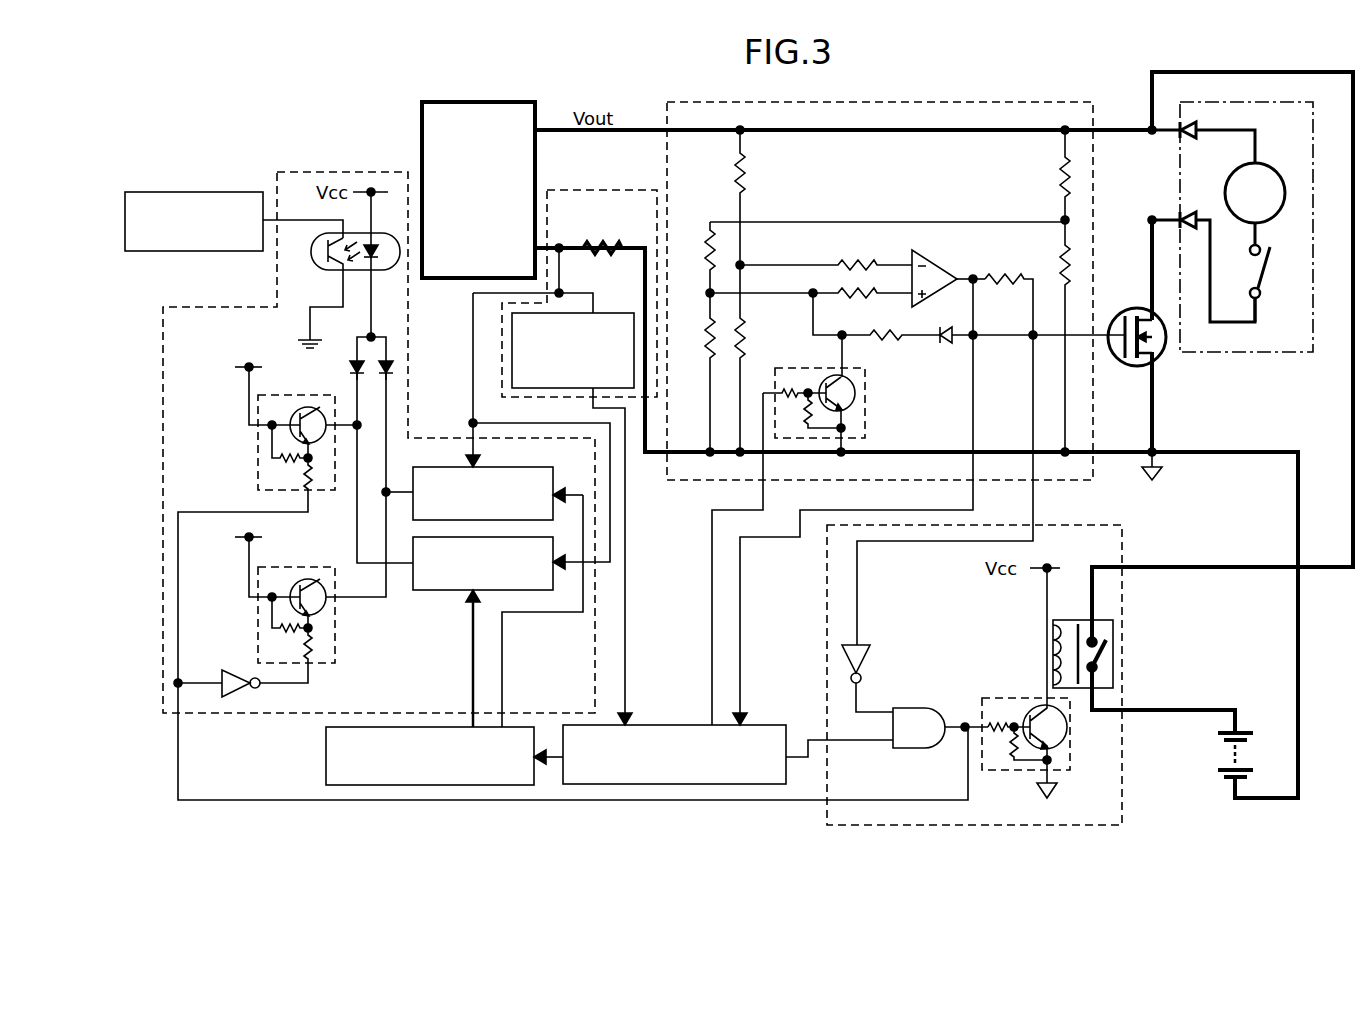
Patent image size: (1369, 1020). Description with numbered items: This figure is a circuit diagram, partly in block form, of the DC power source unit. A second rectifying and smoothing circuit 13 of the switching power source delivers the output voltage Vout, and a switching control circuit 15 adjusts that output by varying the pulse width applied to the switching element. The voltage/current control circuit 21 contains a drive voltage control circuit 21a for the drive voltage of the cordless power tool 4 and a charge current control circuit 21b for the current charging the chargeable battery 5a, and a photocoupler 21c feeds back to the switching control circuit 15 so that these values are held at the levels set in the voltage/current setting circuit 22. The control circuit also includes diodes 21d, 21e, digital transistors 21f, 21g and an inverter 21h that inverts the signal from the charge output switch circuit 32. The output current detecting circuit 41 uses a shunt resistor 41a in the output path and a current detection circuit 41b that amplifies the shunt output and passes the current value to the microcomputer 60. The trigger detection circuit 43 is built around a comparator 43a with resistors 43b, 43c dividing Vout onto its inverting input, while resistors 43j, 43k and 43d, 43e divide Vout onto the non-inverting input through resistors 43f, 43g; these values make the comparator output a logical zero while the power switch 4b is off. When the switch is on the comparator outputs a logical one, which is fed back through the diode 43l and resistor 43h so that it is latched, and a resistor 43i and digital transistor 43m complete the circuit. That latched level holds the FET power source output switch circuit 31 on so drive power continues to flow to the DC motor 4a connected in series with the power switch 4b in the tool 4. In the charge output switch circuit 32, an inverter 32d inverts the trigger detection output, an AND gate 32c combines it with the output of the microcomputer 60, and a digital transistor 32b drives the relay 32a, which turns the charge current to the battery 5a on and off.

The cordless power tool 4 is at (1246, 253).
The DC motor 4a is at (1268, 165).
The power switch 4b is at (1262, 278).
The chargeable battery 5a is at (1221, 760).
The second rectifying and smoothing circuit 13 is at (497, 102).
The switching control circuit 15 is at (225, 192).
The voltage/current control circuit 21 is at (372, 172).
The drive voltage control circuit 21a is at (440, 467).
The charge current control circuit 21b is at (445, 590).
The photocoupler 21c is at (317, 263).
The diode 21d is at (348, 365).
The diode 21e is at (393, 358).
The digital transistor 21f is at (258, 449).
The digital transistor 21g is at (312, 567).
The inverter 21h is at (228, 670).
The voltage/current setting circuit 22 is at (326, 745).
The power source output switch circuit 31 is at (1130, 307).
The charge output switch circuit 32 is at (825, 578).
The relay 32a is at (1052, 648).
The digital transistor 32b is at (1000, 697).
The AND gate 32c is at (925, 708).
The inverter 32d is at (866, 650).
The output current detecting circuit 41 is at (613, 190).
The shunt resistor 41a is at (597, 240).
The current detection circuit 41b is at (607, 313).
The trigger detection circuit 43 is at (1010, 99).
The comparator 43a is at (935, 270).
The resistor 43b is at (750, 176).
The resistor 43c is at (748, 340).
The resistor 43d is at (709, 228).
The resistor 43e is at (705, 340).
The resistor 43f is at (840, 262).
The resistor 43g is at (850, 298).
The resistor 43h is at (880, 348).
The resistor 43i is at (1002, 287).
The resistor 43j is at (1058, 172).
The resistor 43k is at (1058, 250).
The diode 43l is at (945, 348).
The digital transistor 43m is at (868, 410).
The microcomputer 60 is at (765, 725).